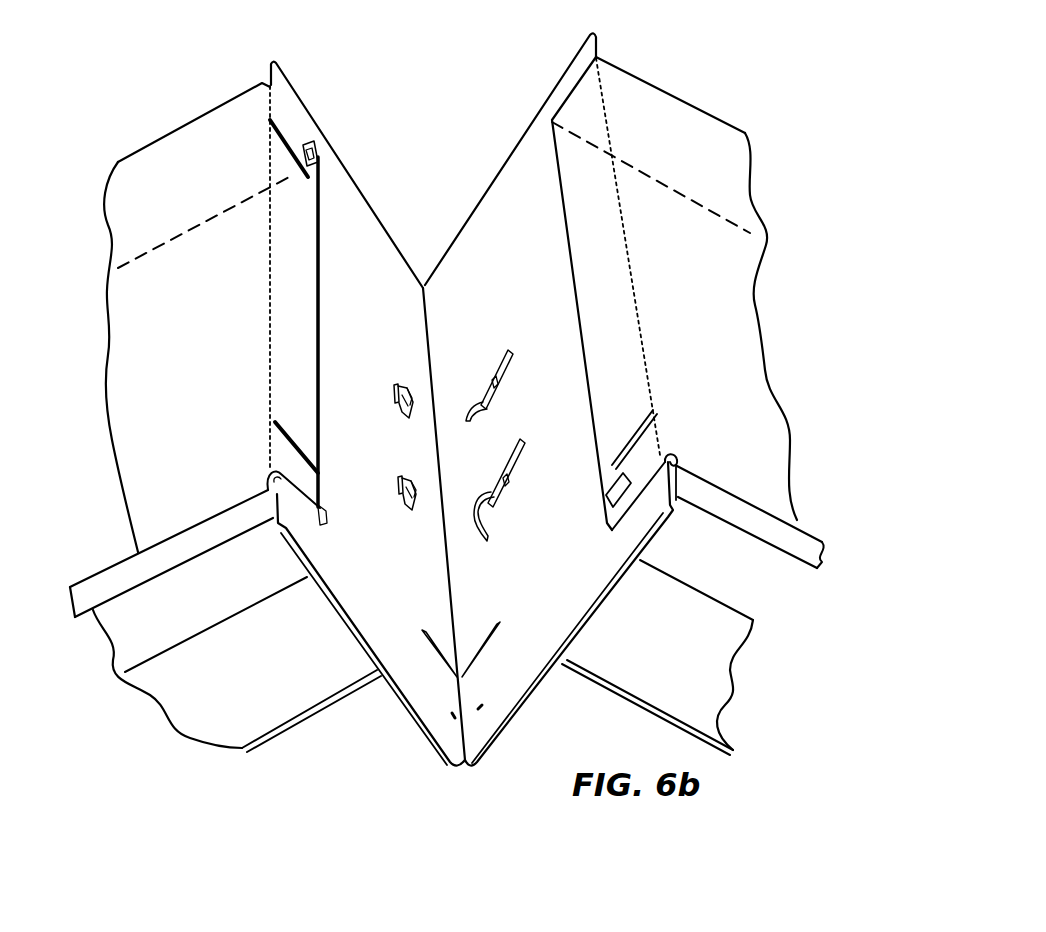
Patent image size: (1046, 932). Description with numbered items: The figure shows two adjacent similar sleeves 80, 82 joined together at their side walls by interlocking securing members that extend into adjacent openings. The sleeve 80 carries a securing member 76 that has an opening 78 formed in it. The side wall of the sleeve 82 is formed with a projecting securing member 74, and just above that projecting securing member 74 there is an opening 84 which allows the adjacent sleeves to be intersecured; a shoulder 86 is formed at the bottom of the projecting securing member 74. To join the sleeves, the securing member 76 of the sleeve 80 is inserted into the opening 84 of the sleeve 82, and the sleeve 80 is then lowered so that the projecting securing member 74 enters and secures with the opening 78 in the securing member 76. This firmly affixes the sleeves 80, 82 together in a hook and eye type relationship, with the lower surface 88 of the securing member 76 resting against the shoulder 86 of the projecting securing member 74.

The projecting securing member 74 is at (483, 387).
The securing member 76 is at (400, 412).
The opening 78 is at (393, 394).
The sleeve 80 is at (164, 369).
The sleeve 82 is at (683, 320).
The opening 84 is at (513, 362).
The shoulder 86 is at (477, 487).
The lower surface 88 is at (404, 403).